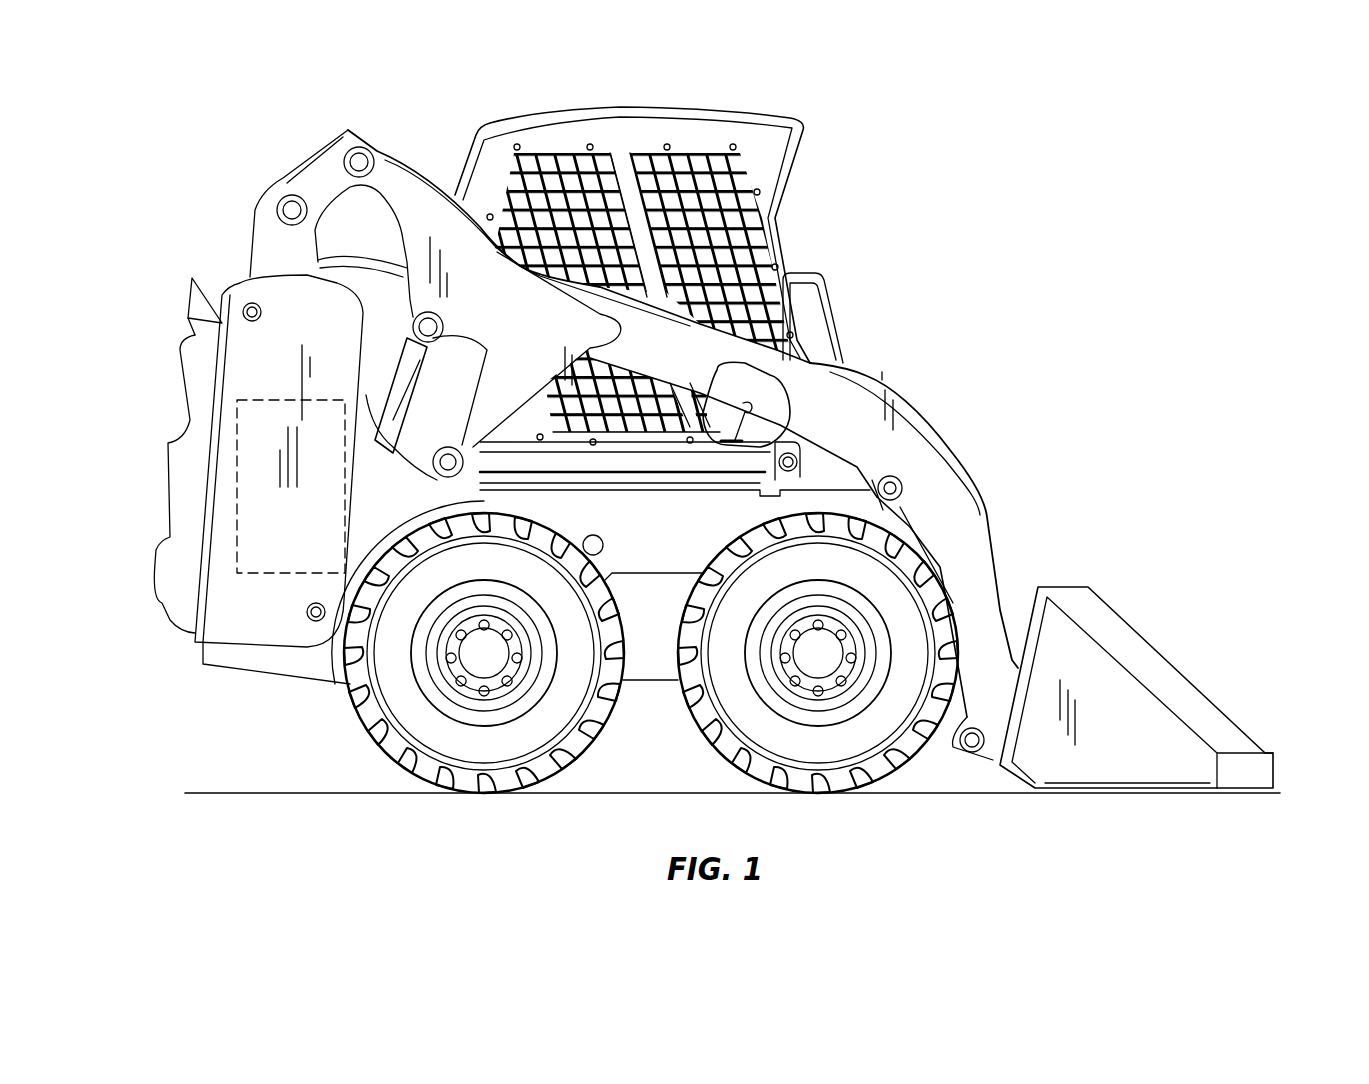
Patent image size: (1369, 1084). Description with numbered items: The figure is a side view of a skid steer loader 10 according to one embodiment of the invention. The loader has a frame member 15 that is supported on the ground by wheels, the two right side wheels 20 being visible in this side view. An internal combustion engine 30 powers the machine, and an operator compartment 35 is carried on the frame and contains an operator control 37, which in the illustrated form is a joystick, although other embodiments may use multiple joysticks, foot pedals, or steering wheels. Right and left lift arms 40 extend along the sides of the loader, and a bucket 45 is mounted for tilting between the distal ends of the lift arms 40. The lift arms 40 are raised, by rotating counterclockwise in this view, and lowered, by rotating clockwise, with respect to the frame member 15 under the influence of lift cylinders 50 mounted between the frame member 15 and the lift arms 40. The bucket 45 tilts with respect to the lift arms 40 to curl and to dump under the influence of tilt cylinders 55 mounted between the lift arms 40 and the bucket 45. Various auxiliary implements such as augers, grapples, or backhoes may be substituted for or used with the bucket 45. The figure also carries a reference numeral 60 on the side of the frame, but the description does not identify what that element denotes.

The skid steer loader 10 is at (945, 180).
The frame member 15 is at (652, 673).
The right side wheels 20 is at (458, 790).
The internal combustion engine 30 is at (267, 547).
The operator compartment 35 is at (690, 137).
The operator control 37 is at (752, 404).
The lift arms 40 is at (697, 340).
The bucket 45 is at (1110, 625).
The lift cylinders 50 is at (395, 395).
The tilt cylinders 55 is at (903, 507).
The side member 60 is at (597, 460).